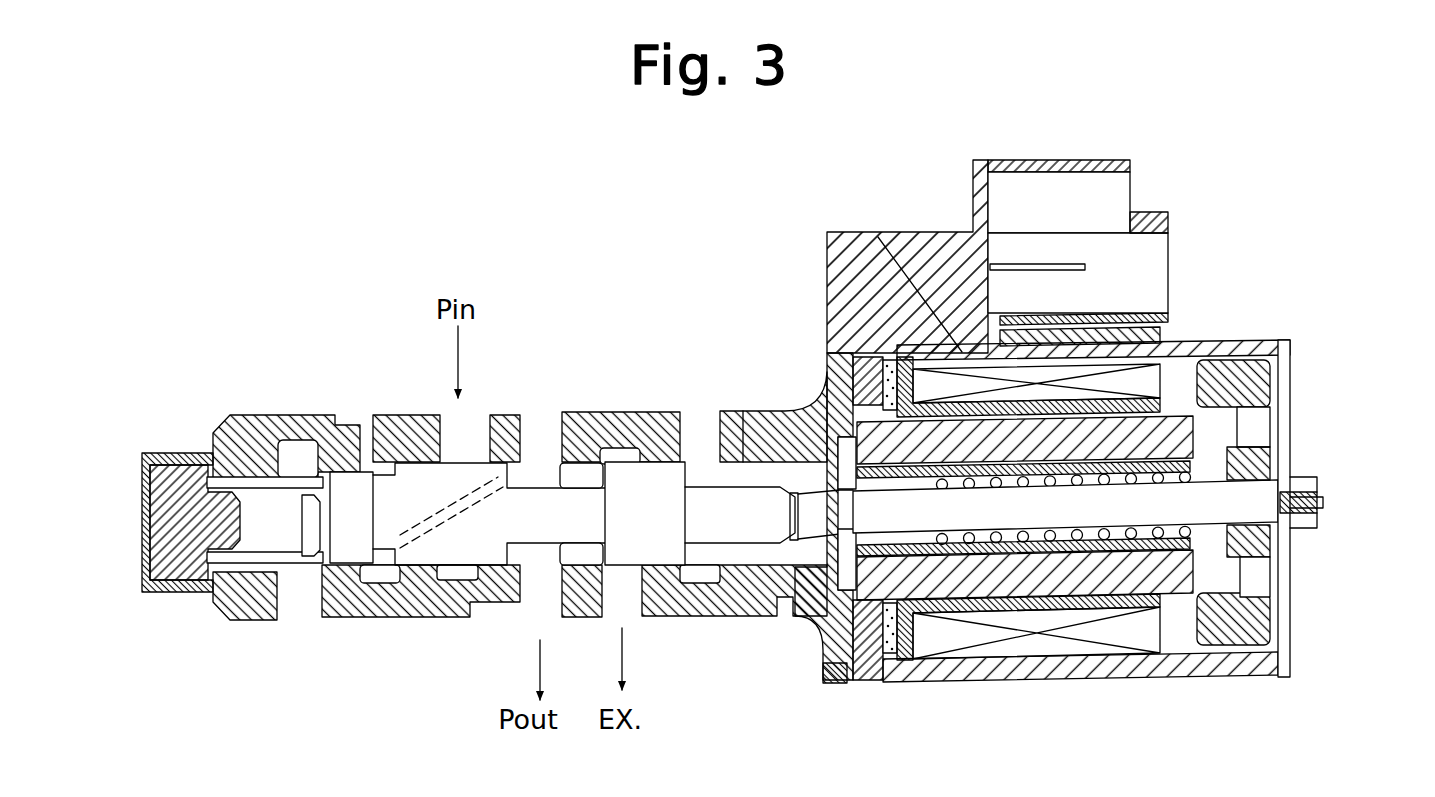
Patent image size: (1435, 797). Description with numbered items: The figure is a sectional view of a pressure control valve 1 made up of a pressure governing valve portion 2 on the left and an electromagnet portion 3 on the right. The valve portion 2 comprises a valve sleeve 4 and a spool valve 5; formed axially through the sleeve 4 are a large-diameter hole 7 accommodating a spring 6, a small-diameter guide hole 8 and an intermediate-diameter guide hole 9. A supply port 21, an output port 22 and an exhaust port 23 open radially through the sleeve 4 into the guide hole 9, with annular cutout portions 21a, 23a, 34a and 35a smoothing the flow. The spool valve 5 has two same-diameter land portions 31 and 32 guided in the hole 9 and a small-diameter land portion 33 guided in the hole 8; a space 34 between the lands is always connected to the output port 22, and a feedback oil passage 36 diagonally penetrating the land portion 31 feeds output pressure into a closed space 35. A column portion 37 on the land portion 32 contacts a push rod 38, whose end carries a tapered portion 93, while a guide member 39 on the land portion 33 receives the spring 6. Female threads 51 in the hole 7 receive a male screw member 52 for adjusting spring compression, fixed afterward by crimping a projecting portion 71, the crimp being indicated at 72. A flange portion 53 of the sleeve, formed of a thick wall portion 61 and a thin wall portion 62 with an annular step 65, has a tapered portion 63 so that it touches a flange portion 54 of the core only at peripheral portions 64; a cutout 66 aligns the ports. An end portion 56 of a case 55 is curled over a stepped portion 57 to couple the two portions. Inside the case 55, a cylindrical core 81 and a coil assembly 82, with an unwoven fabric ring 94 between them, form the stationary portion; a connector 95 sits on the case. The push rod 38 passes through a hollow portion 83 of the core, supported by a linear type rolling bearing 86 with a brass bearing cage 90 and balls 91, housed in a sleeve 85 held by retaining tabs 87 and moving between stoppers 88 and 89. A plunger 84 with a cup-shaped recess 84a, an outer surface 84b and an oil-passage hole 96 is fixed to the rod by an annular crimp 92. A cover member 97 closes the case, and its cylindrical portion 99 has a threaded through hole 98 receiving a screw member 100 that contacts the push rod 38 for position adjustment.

The pressure control valve 1 is at (679, 310).
The pressure governing valve portion 2 is at (612, 410).
The electromagnet portion 3 is at (1015, 697).
The valve sleeve 4 is at (328, 440).
The spool valve 5 is at (455, 430).
The spring 6 is at (262, 440).
The large-diameter hole 7 is at (235, 465).
The small-diameter guide hole 8 is at (353, 540).
The intermediate-diameter guide hole 9 is at (552, 477).
The supply port 21 is at (423, 493).
The annular cutout portion 21a is at (462, 520).
The output port 22 is at (582, 600).
The exhaust port 23 is at (622, 603).
The annular cutout portion 23a is at (632, 455).
The land portion 31 is at (445, 590).
The land portion 32 is at (662, 543).
The small-diameter land portion 33 is at (378, 583).
The space 34 is at (528, 417).
The annular cutout portion 34a is at (540, 575).
The closed space 35 is at (377, 443).
The annular cutout portion 35a is at (432, 552).
The feedback oil passage 36 is at (478, 580).
The column portion 37 is at (742, 503).
The push rod 38 is at (1162, 518).
The guide member 39 is at (307, 540).
The female threads 51 is at (147, 593).
The male screw member 52 is at (157, 533).
The flange portion 53 is at (880, 390).
The flange portion 54 is at (893, 365).
The case 55 is at (1072, 665).
The end portion 56 is at (833, 683).
The stepped portion 57 is at (876, 655).
The thick wall portion 61 is at (820, 605).
The thin wall portion 62 is at (847, 585).
The tapered portion 63 is at (822, 395).
The peripheral portions 64 is at (865, 345).
The annular step 65 is at (838, 650).
The cutout 66 is at (800, 605).
The projecting portion 71 is at (177, 453).
The crimp 72 is at (177, 593).
The core 81 is at (1100, 615).
The coil assembly 82 is at (988, 655).
The hollow portion 83 is at (1040, 625).
The plunger 84 is at (1250, 635).
The cup-shaped recess 84a is at (1217, 590).
The outer surface 84b is at (1255, 340).
The sleeve 85 is at (1125, 585).
The linear type rolling bearing 86 is at (1170, 340).
The retaining tabs 87 is at (1235, 400).
The stopper 88 is at (792, 422).
The stopper 89 is at (1257, 445).
The bearing cage 90 is at (883, 660).
The balls 91 is at (930, 650).
The annular crimp 92 is at (1275, 527).
The tapered portion 93 is at (812, 522).
The ring 94 is at (912, 357).
The connector 95 is at (950, 240).
The oil-passage hole 96 is at (1252, 572).
The cover member 97 is at (1287, 618).
The through hole 98 is at (1322, 490).
The cylindrical portion 99 is at (1307, 477).
The screw member 100 is at (1328, 500).